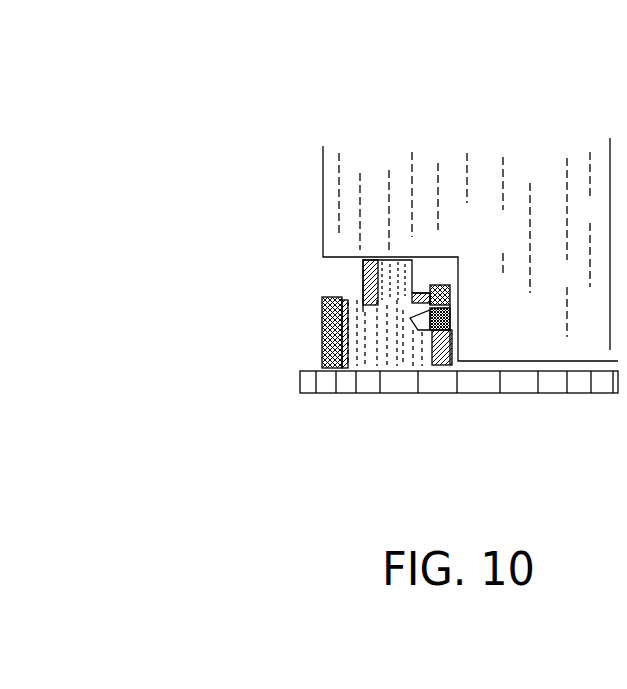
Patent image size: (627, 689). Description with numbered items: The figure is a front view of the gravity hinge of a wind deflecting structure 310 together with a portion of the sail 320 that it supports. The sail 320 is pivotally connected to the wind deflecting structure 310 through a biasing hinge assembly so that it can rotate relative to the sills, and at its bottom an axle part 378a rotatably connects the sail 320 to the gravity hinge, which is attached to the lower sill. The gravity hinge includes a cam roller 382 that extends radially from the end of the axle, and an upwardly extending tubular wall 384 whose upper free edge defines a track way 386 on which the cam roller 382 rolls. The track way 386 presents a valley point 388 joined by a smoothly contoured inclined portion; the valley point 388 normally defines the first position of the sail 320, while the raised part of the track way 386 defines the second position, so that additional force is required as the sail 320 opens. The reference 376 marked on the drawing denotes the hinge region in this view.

The sail 320 is at (512, 170).
The wind deflecting structure 310 is at (287, 392).
The axle part 378a is at (362, 273).
The cam roller 382 is at (443, 283).
The valley point 388 is at (432, 317).
The track way 386 is at (412, 328).
The tubular wall 384 is at (323, 343).
The retention assembly 376 is at (307, 278).